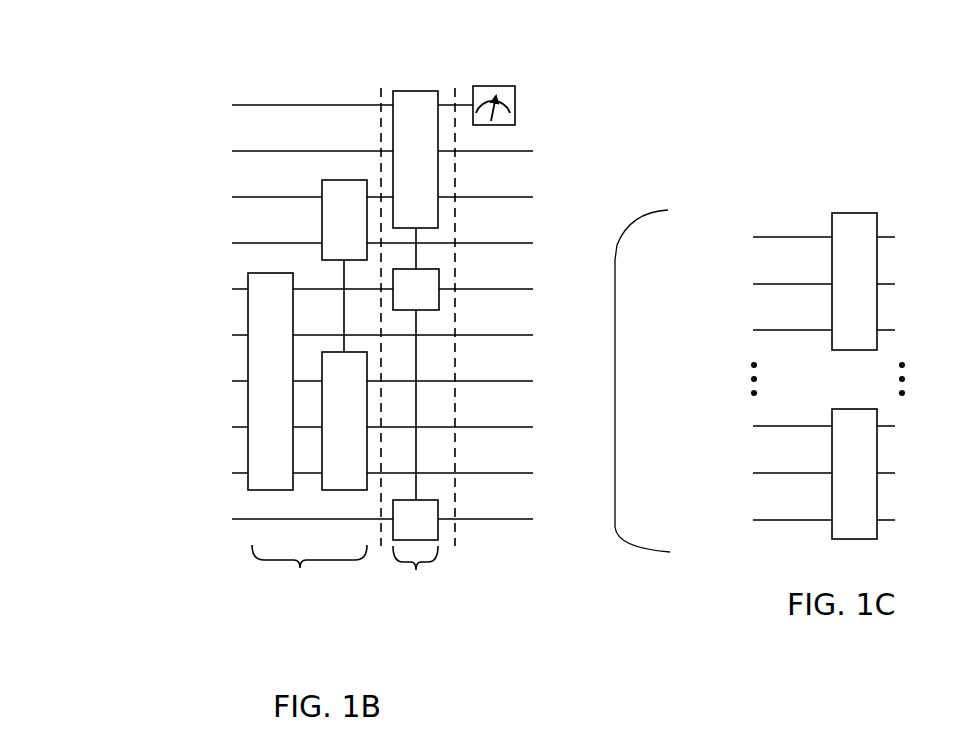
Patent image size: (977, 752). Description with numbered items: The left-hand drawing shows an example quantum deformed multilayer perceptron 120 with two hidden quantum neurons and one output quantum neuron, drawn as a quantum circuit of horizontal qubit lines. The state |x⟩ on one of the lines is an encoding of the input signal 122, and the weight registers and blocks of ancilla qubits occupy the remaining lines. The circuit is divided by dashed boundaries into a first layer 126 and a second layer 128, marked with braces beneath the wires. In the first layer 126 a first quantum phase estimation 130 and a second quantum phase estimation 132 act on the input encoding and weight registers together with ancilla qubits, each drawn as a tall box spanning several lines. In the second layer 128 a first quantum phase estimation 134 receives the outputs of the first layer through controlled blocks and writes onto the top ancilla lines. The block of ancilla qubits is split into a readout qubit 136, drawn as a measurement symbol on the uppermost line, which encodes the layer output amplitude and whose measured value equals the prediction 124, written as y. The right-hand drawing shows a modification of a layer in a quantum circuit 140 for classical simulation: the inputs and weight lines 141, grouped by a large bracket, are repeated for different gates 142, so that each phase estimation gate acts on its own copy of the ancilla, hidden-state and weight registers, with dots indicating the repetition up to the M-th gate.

In FIG. 1B, the quantum deformed multilayer perceptron 120 is at (160, 58).
In FIG. 1B, the input signal 122 is at (190, 381).
In FIG. 1B, the prediction 124 is at (555, 107).
In FIG. 1B, the first layer 126 is at (303, 603).
In FIG. 1B, the second layer 128 is at (433, 603).
In FIG. 1B, the first quantum phase estimation 130 is at (275, 492).
In FIG. 1B, the second quantum phase estimation 132 is at (343, 492).
In FIG. 1B, the first quantum phase estimation 134 is at (410, 90).
In FIG. 1B, the readout qubit 136 is at (495, 86).
In FIG. 1C, the quantum circuit 140 is at (700, 160).
In FIG. 1C, the inputs and weight lines 141 is at (632, 548).
In FIG. 1C, the gates 142 is at (878, 488).